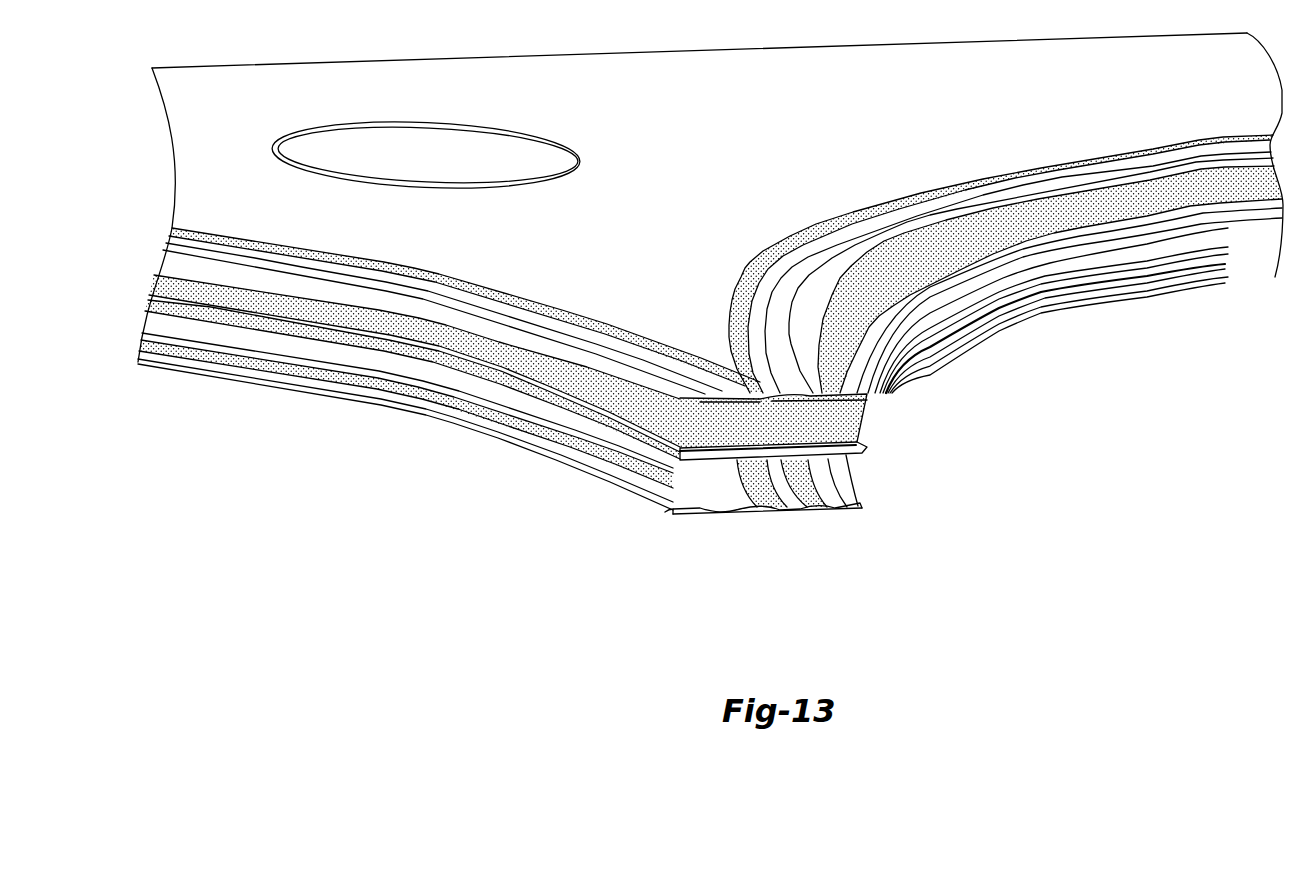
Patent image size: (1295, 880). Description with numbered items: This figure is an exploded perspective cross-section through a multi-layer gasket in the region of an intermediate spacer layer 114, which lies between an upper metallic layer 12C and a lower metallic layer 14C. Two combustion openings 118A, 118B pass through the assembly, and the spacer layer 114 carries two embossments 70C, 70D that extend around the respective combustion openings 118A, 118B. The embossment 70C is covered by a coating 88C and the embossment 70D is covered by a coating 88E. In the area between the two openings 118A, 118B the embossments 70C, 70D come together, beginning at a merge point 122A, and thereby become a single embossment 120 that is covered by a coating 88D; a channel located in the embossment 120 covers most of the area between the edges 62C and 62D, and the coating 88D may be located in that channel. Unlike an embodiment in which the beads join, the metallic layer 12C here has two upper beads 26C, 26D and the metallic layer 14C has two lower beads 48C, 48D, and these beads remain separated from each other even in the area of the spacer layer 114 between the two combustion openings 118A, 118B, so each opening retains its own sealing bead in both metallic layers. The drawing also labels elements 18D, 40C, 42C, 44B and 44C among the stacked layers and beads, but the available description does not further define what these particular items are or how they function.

The metallic layer 12C is at (857, 357).
The metallic layer 14C is at (647, 482).
The inner structural layer of second panel 18D is at (870, 395).
The upper bead 26C is at (427, 278).
The upper bead 26D is at (820, 240).
The bottom layer of first panel 40C is at (663, 513).
The lower plate 42C is at (853, 497).
The intermediate layer 44B is at (540, 433).
The intermediate layer 44C is at (850, 507).
The lower bead 48C is at (278, 368).
The lower bead 48D is at (808, 514).
The edge 62C is at (643, 447).
The edge 62D is at (860, 443).
The embossment 70C is at (217, 298).
The embossment 70D is at (1100, 218).
The coating 88C is at (306, 313).
The coating 88D is at (823, 397).
The coating 88E is at (1187, 200).
The intermediate spacer layer 114 is at (497, 368).
The combustion opening 118A is at (390, 579).
The combustion opening 118B is at (1169, 485).
The single embossment 120 is at (808, 422).
The merge point 122A is at (733, 372).